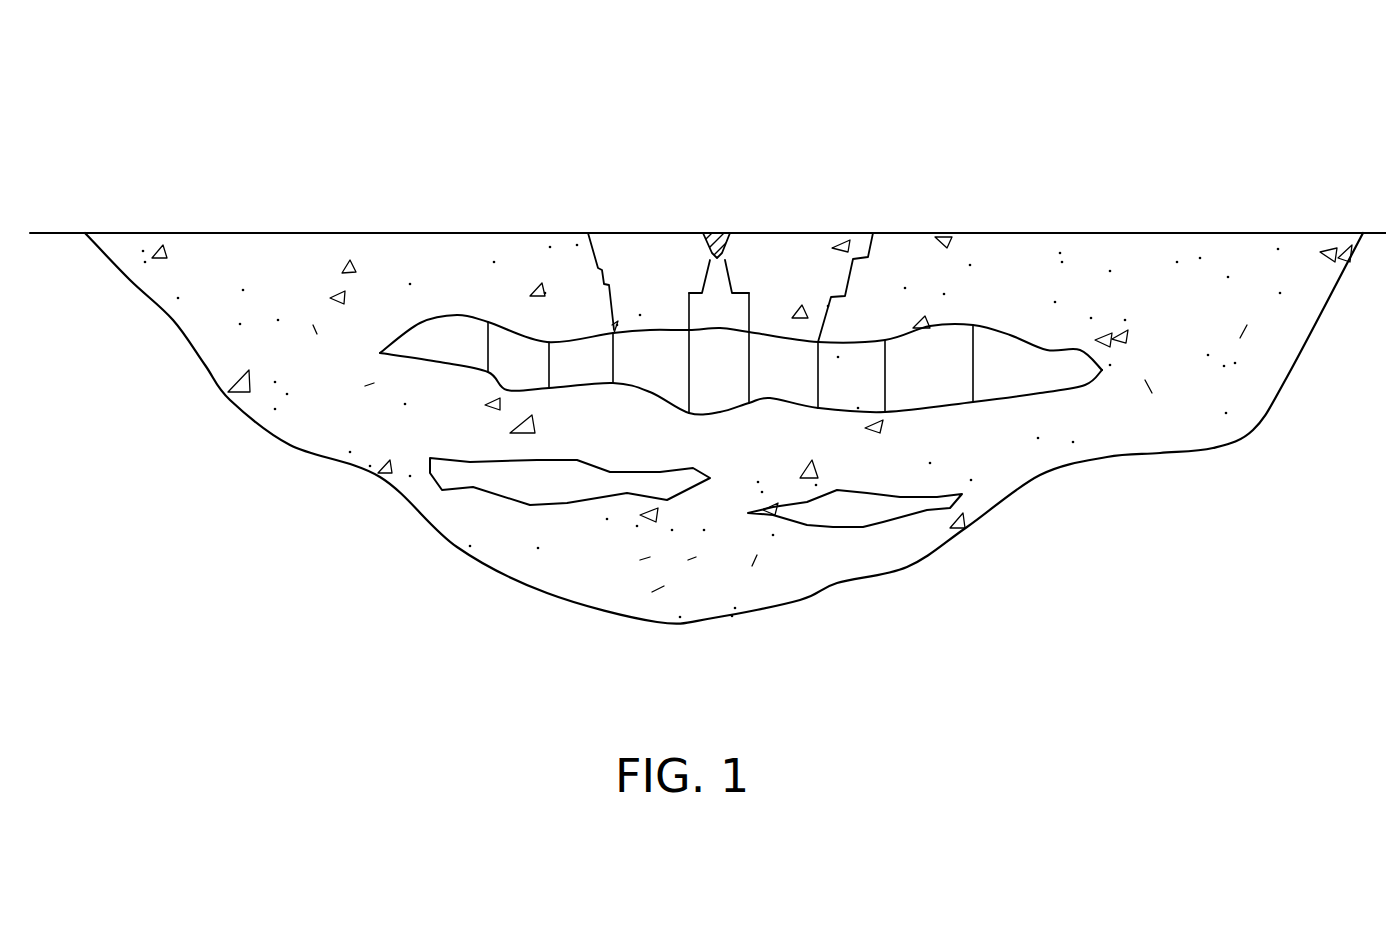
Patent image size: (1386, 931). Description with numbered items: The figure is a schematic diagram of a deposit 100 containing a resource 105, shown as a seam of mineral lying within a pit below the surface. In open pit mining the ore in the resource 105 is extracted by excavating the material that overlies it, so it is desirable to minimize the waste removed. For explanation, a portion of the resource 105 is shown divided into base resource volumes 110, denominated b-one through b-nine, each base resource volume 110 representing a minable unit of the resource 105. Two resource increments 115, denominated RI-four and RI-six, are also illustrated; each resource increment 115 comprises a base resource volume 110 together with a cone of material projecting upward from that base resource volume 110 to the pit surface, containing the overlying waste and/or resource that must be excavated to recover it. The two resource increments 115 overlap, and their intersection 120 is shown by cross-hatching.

The deposit 100 is at (1168, 173).
The resource 105 is at (1047, 350).
The base resource volume 110 is at (417, 338).
The resource increment 115 is at (583, 252).
The intersection 120 is at (723, 229).